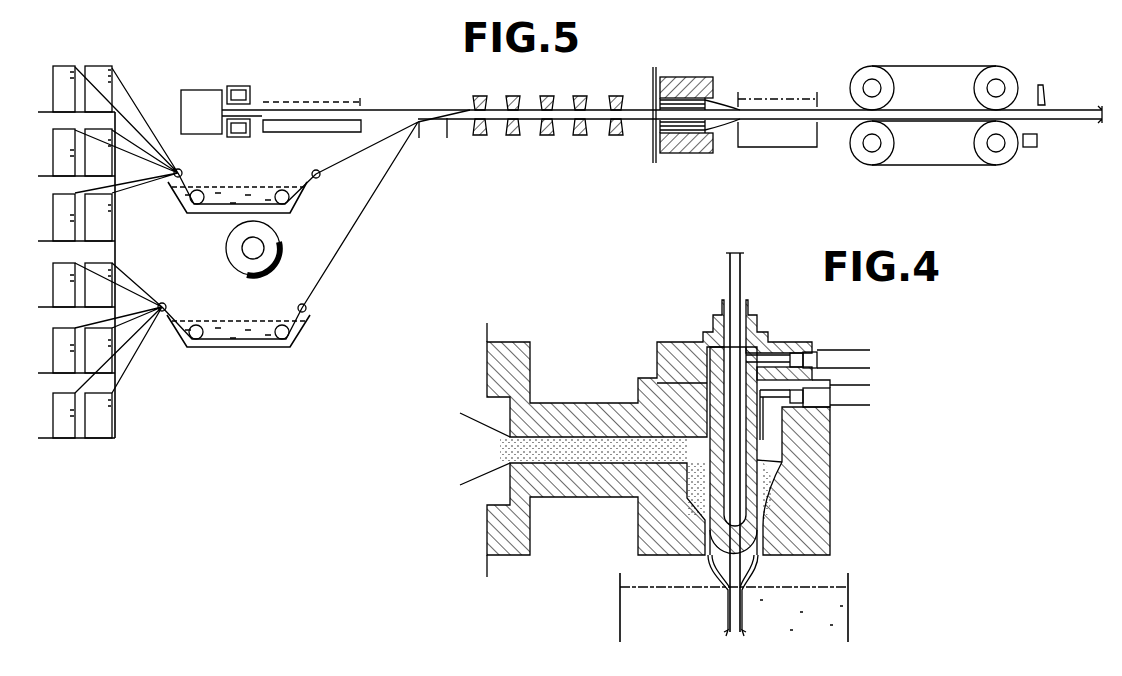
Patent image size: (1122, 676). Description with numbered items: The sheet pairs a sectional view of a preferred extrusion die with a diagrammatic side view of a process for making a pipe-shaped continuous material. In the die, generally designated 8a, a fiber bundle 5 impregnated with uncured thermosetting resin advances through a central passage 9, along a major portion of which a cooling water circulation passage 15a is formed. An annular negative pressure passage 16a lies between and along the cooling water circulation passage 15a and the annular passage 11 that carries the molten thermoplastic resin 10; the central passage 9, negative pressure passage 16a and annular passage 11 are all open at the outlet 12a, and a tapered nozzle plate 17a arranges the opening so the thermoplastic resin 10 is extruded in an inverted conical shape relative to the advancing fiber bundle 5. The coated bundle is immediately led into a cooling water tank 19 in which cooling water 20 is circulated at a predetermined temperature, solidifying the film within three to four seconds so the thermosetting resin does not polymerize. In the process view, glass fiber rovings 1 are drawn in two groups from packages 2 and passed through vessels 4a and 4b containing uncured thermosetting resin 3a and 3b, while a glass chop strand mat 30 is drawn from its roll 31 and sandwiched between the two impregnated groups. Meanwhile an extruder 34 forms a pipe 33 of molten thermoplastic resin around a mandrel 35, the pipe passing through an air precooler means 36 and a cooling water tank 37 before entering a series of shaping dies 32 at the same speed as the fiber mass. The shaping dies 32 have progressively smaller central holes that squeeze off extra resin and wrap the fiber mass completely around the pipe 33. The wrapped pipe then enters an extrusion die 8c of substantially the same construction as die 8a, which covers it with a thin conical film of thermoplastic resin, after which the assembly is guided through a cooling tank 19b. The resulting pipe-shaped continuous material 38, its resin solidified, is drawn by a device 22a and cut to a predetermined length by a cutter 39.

In FIG. 5, the glass fiber rovings 1 is at (131, 94).
In FIG. 5, the packages 2 is at (98, 68).
In FIG. 5, the uncured thermosetting resin 3a is at (239, 172).
In FIG. 5, the uncured thermosetting resin 3b is at (258, 324).
In FIG. 5, the vessel 4a is at (208, 215).
In FIG. 5, the vessel 4b is at (306, 323).
In FIG. 4, the fiber bundle 5 is at (740, 287).
In FIG. 4, the extrusion die 8a is at (843, 465).
In FIG. 5, the extrusion die 8c is at (688, 84).
In FIG. 4, the central passage 9 is at (745, 446).
In FIG. 4, the thermoplastic resin 10 is at (776, 492).
In FIG. 4, the annular passage 11 is at (690, 487).
In FIG. 4, the outlet 12a is at (762, 557).
In FIG. 4, the cooling water circulation passage 15a is at (775, 350).
In FIG. 4, the annular negative pressure passage 16a is at (790, 408).
In FIG. 4, the tapered nozzle plate 17a is at (716, 556).
In FIG. 4, the cooling water tank 19 is at (850, 603).
In FIG. 5, the cooling tank 19b is at (810, 149).
In FIG. 4, the cooling water 20 is at (840, 622).
In FIG. 5, the drawing device 22a is at (921, 70).
In FIG. 5, the glass chop strand mat 30 is at (305, 239).
In FIG. 5, the roll 31 is at (242, 259).
In FIG. 5, the shaping dies 32 is at (498, 91).
In FIG. 5, the pipe 33 is at (418, 120).
In FIG. 5, the extruder 34 is at (203, 94).
In FIG. 5, the mandrel 35 is at (252, 137).
In FIG. 5, the air precooler means 36 is at (241, 87).
In FIG. 5, the cooling water tank 37 is at (372, 92).
In FIG. 5, the pipe-shaped continuous material 38 is at (833, 110).
In FIG. 5, the cutter 39 is at (1046, 93).